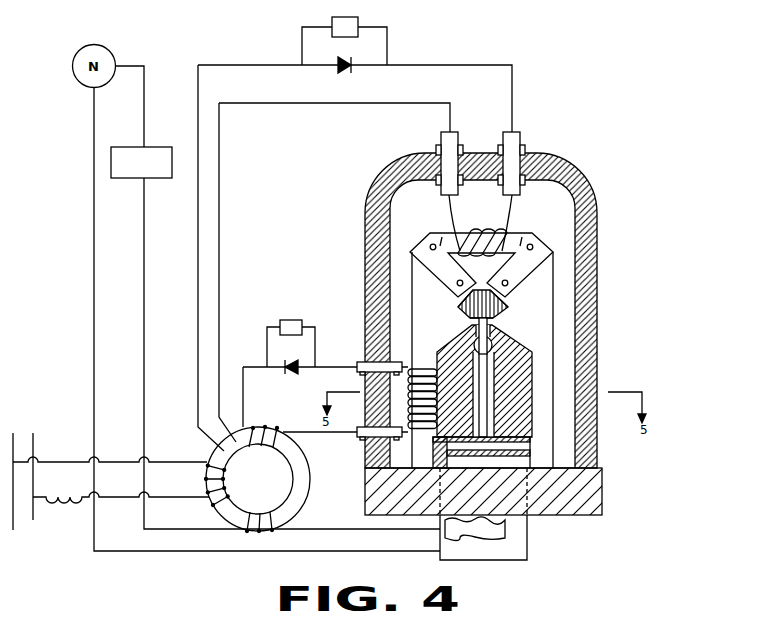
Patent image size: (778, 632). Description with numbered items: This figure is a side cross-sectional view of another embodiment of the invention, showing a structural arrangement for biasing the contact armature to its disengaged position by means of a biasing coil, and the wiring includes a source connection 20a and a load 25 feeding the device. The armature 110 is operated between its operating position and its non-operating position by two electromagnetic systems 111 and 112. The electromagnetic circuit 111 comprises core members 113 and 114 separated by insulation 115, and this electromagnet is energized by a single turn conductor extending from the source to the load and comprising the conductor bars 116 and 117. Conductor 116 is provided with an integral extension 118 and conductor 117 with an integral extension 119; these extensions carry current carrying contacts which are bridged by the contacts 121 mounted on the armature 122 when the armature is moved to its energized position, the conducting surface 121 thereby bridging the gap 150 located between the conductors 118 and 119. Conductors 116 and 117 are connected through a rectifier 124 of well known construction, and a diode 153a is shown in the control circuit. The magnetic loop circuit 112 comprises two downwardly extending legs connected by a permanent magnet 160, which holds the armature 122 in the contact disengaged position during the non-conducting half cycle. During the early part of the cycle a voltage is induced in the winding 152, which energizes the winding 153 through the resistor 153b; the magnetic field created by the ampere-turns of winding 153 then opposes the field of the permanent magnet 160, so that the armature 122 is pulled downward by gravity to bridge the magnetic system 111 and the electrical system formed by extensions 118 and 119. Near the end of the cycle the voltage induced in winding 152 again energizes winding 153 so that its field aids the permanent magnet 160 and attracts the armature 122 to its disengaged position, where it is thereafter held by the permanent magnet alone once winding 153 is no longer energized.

The power supply lines 20a is at (26, 515).
The load 25 is at (160, 178).
The armature 110 is at (500, 292).
The electromagnetic system 111 is at (557, 383).
The magnetic loop circuit 112 is at (534, 255).
The core member 113 is at (548, 362).
The core member 114 is at (420, 452).
The insulation 115 is at (545, 455).
The conductor bar 116 is at (515, 557).
The conductor bar 117 is at (480, 534).
The integral extension 118 is at (440, 346).
The integral extension 119 is at (492, 344).
The contacts 121 is at (461, 312).
The armature 122 is at (459, 302).
The rectifier 124 is at (490, 376).
The gap 150 is at (490, 323).
The winding 152 is at (238, 466).
The winding 153 is at (262, 452).
The diode 153a is at (348, 66).
The resistor 153b is at (352, 17).
The permanent magnet 160 is at (521, 233).